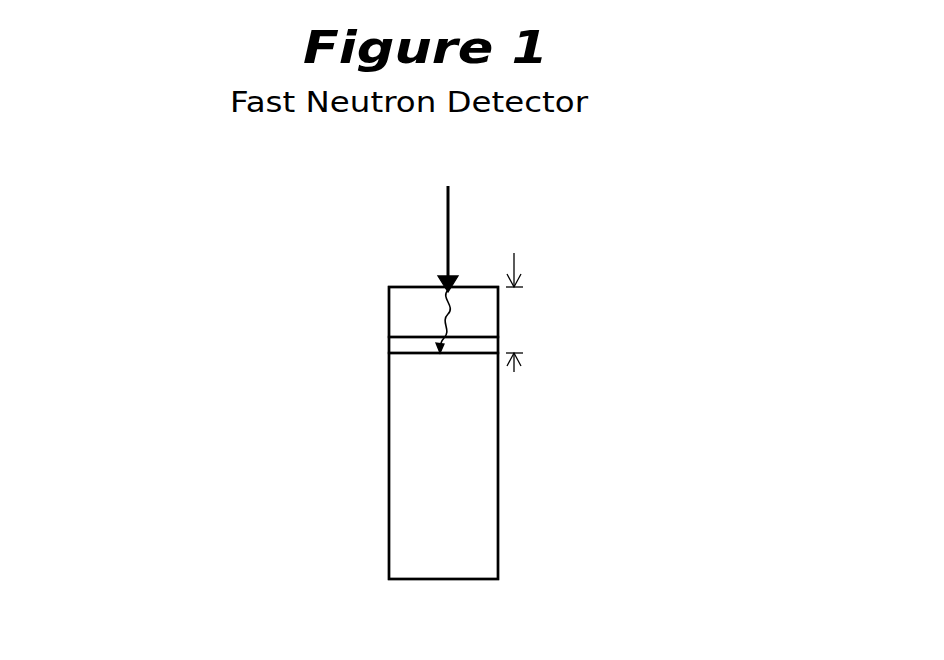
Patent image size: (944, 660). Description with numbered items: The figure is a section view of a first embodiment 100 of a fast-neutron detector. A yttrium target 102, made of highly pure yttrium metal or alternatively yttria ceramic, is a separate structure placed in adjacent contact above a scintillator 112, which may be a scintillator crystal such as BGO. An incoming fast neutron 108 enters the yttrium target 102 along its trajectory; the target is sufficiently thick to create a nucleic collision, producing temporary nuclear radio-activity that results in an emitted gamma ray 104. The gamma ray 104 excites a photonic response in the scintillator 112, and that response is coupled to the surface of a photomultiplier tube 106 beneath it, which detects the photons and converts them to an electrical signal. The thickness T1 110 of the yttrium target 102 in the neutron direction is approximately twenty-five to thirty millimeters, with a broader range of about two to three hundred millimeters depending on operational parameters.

The first embodiment 100 is at (138, 169).
The yttrium target 102 is at (389, 291).
The gamma ray 104 is at (440, 313).
The photomultiplier tube (PMT) 106 is at (389, 463).
The incoming neutron 108 is at (450, 246).
The thickness T1 110 is at (564, 312).
The scintillator 112 is at (389, 346).